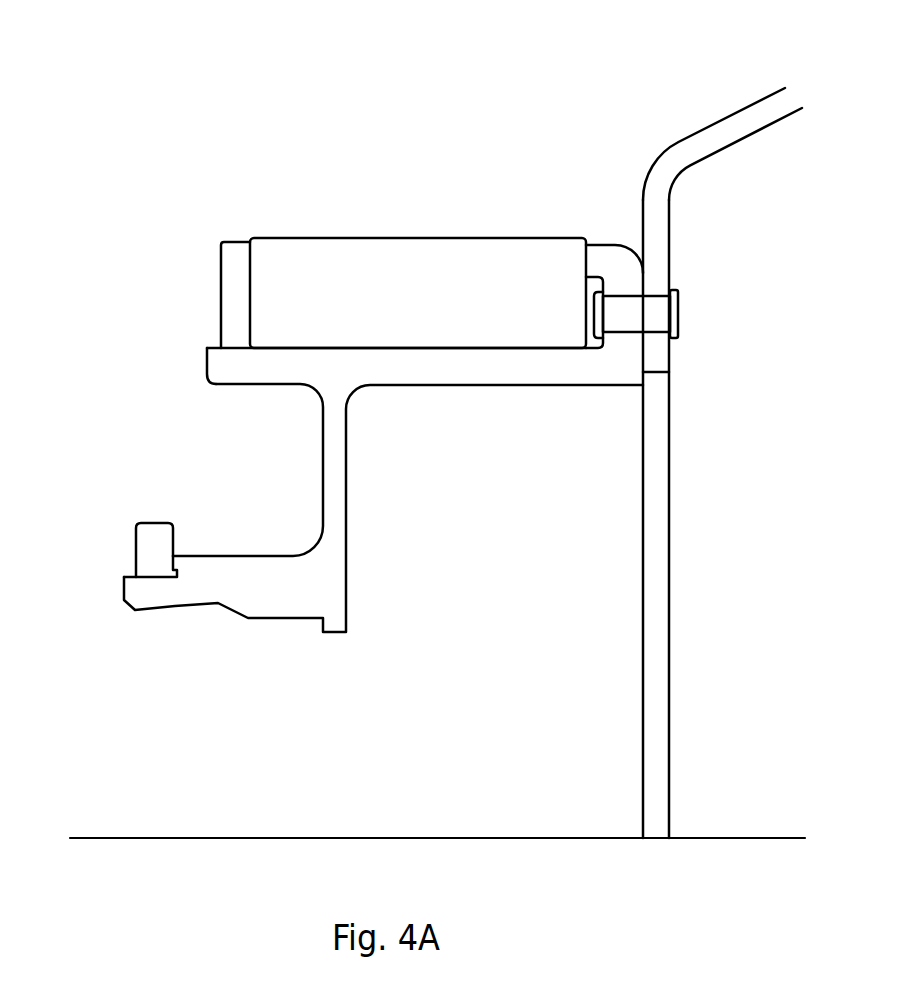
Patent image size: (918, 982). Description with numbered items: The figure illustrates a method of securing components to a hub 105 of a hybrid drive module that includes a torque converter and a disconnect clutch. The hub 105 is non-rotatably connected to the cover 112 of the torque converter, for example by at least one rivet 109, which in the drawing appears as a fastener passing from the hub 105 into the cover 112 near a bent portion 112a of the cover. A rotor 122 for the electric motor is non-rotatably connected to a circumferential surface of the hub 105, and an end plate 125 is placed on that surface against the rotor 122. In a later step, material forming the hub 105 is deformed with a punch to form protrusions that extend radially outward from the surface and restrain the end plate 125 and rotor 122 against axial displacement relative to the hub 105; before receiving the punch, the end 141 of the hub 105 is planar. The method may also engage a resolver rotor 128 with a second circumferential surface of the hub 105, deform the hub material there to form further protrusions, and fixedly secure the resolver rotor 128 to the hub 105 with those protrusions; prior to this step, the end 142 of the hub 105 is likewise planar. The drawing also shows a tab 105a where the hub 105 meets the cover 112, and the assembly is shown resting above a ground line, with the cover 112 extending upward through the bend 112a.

The hub 105 is at (265, 584).
The bracket tab 105a is at (669, 372).
The rivet 109 is at (683, 313).
The cover 112 is at (672, 589).
The tube bend 112a is at (663, 163).
The rotor 122 is at (410, 188).
The end plate 125 is at (231, 235).
The resolver rotor 128 is at (126, 545).
The end of hub 141 is at (207, 361).
The end of hub 142 is at (124, 588).